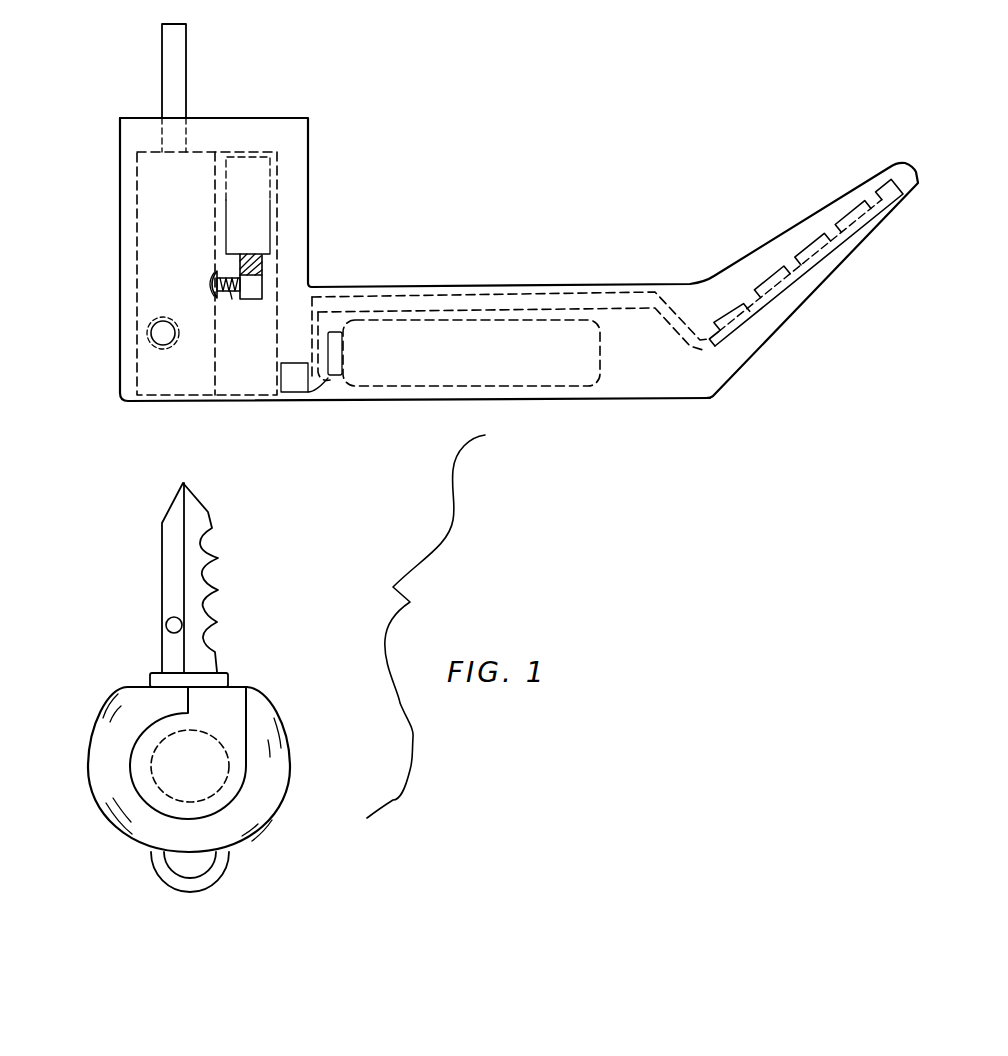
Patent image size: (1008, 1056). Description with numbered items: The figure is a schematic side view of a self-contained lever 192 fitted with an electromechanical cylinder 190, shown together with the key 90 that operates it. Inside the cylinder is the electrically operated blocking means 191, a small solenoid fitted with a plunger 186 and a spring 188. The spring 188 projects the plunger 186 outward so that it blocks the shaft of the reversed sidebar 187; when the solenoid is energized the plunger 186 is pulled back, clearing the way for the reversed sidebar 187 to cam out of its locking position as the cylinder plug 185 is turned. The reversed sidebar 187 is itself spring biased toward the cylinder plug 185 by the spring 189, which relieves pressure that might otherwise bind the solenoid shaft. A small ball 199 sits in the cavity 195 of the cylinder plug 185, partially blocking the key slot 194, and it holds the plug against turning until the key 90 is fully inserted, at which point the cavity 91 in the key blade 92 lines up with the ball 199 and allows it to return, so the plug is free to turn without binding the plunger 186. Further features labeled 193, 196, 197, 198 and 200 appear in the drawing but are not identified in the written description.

The key 90 is at (123, 838).
The cavity in the key blade 91 is at (163, 623).
The key blade 92 is at (193, 573).
The cylinder plug 185 is at (164, 378).
The plunger 186 is at (262, 287).
The reversed sidebar 187 is at (213, 276).
The spring 188 is at (262, 268).
The spring 189 is at (230, 291).
The electromechanical cylinder 190 is at (207, 143).
The electrically operated blocking means 191 is at (257, 180).
The self-contained lever 192 is at (340, 177).
The arm 193 is at (313, 240).
The key slot 194 is at (200, 407).
The cavity 195 is at (140, 340).
The arm channel 196 is at (548, 283).
The compartment 197 is at (480, 365).
The ratchet teeth 198 is at (797, 283).
The ball 199 is at (157, 325).
The post 200 is at (173, 62).